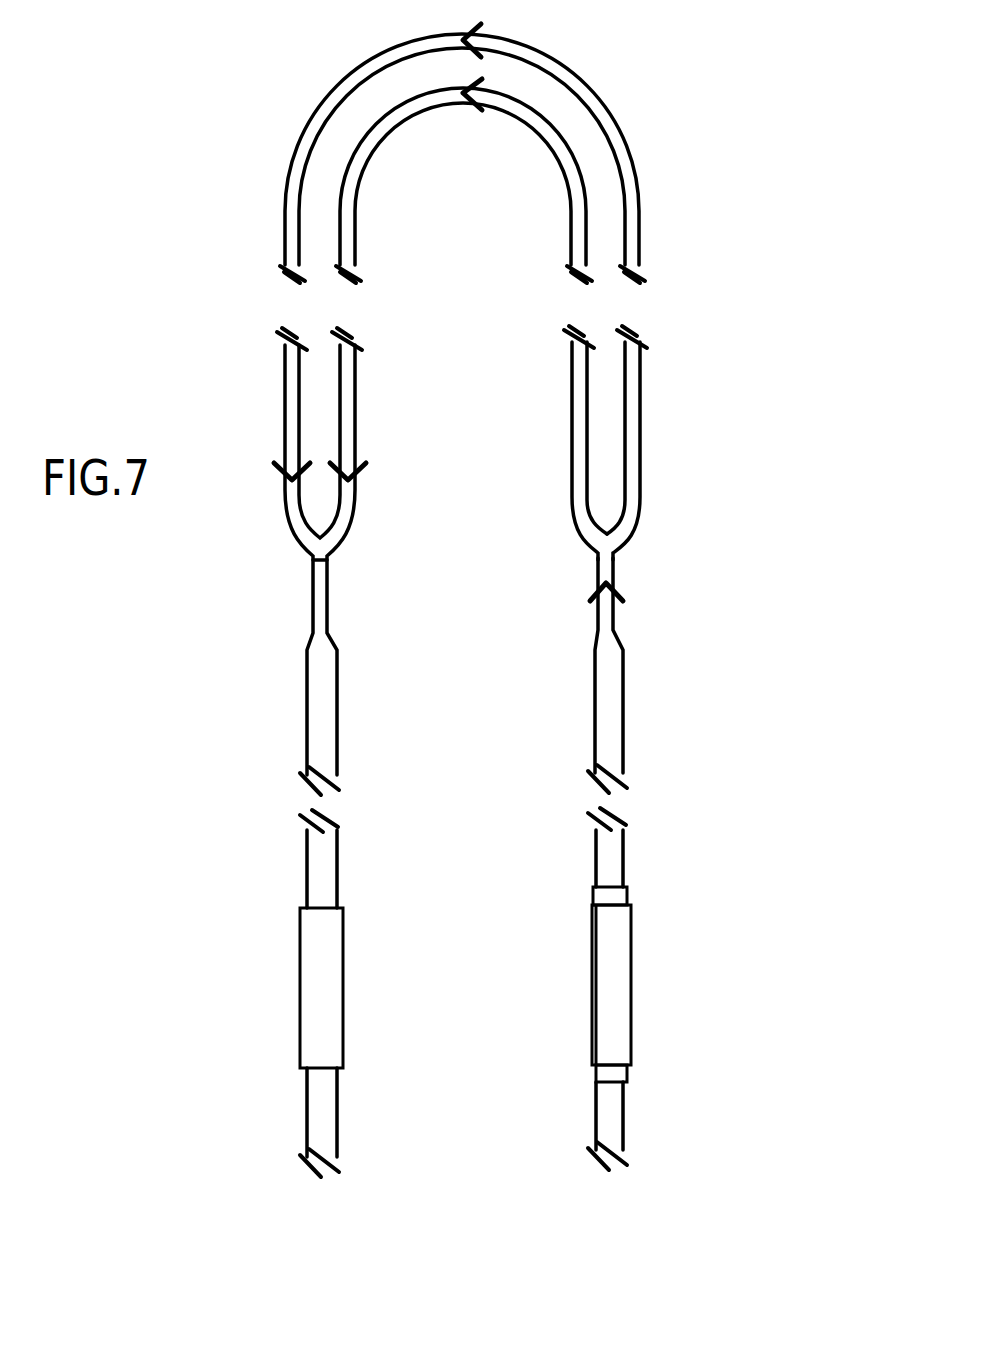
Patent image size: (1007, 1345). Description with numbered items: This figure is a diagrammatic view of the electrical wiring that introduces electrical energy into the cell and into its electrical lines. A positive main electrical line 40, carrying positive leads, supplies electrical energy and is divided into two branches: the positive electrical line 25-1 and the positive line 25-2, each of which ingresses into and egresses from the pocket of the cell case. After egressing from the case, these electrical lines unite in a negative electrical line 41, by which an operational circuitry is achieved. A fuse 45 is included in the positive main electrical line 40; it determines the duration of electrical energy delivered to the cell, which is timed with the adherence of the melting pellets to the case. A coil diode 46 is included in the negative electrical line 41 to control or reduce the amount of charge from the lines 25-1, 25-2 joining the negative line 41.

The positive electrical line 25-1 is at (632, 443).
The positive line 25-2 is at (580, 452).
The positive main electrical line 40 is at (612, 668).
The negative electrical line 41 is at (320, 705).
The fuse 45 is at (617, 970).
The coil diode 46 is at (318, 980).